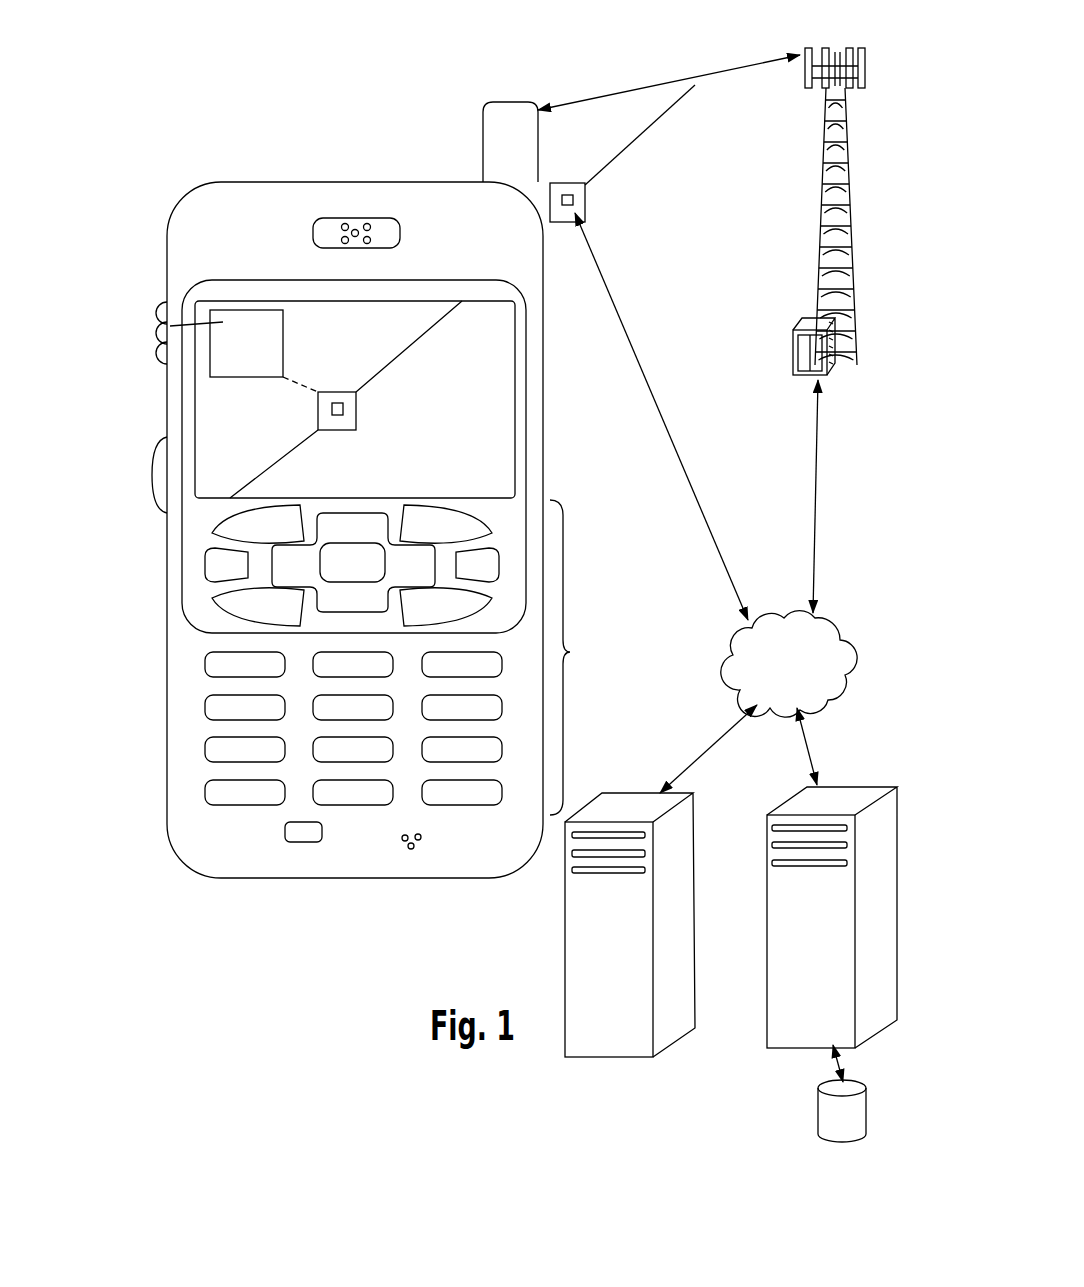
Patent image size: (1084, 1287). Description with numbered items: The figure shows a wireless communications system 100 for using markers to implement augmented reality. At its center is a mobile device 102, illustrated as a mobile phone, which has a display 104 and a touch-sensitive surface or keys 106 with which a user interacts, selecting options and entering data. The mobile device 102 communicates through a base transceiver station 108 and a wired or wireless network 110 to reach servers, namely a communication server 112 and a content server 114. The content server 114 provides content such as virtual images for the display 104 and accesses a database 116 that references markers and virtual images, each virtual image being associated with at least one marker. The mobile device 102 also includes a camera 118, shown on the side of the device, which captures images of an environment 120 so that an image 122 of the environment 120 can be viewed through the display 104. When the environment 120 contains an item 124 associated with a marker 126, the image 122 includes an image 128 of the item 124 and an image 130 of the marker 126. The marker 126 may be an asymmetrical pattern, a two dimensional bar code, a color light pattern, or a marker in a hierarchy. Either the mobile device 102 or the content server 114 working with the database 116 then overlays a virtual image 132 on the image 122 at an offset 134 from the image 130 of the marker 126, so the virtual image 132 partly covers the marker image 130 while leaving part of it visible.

The wireless communications system 100 is at (283, 99).
The mobile device 102 is at (231, 886).
The display 104 is at (527, 356).
The keys 106 is at (416, 657).
The base transceiver station 108 is at (830, 376).
The network 110 is at (740, 690).
The communication server 112 is at (565, 893).
The content server 114 is at (767, 873).
The database 116 is at (822, 1100).
The camera 118 is at (153, 460).
The environment 120 is at (665, 112).
The image of the environment 122 is at (262, 478).
The item 124 is at (587, 186).
The marker 126 is at (574, 204).
The image of the item 128 is at (343, 405).
The image of the marker 130 is at (356, 410).
The virtual image 132 is at (160, 346).
The offset 134 is at (288, 384).